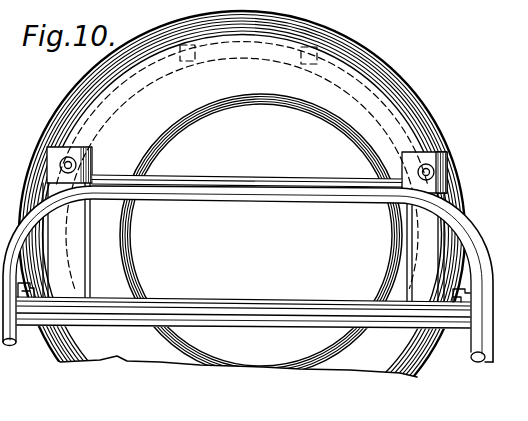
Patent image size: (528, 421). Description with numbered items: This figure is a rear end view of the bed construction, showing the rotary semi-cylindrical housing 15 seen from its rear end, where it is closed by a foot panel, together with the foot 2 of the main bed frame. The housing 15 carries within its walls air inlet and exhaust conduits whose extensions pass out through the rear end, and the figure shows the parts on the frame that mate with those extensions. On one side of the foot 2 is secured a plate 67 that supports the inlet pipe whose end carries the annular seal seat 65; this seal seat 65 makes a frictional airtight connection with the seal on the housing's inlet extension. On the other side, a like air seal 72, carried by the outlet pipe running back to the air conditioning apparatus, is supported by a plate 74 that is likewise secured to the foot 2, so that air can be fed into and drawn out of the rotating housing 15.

The semi-cylindrical housing 15 is at (371, 97).
The foot 2 is at (330, 193).
The annular seal seat 65 is at (402, 163).
The plate 67 is at (438, 157).
The air seal 72 is at (92, 160).
The plate 74 is at (82, 225).